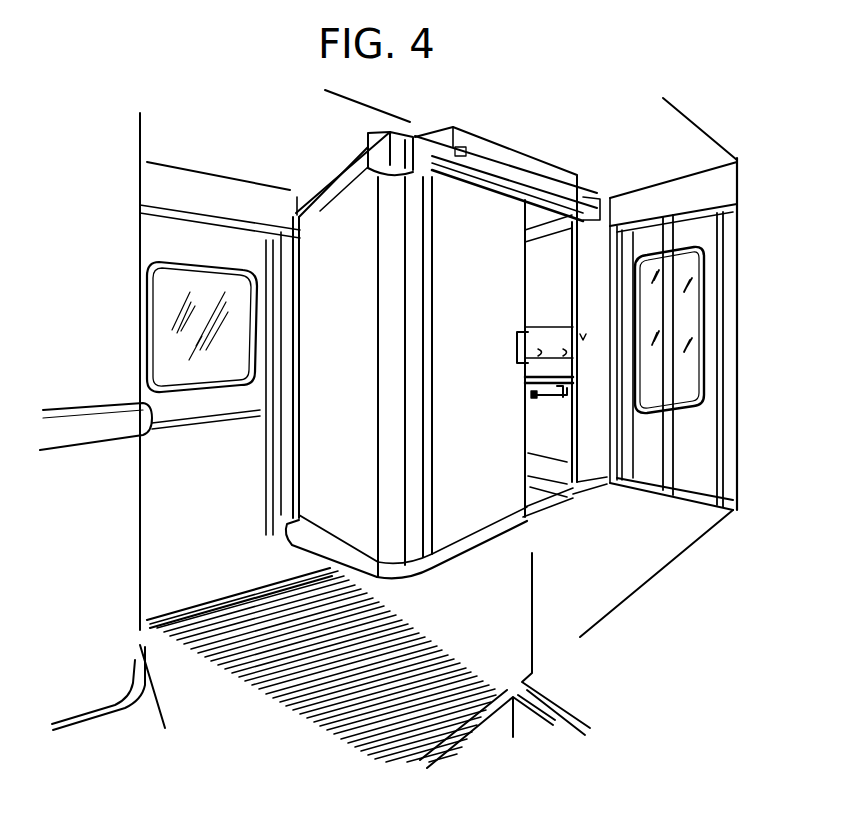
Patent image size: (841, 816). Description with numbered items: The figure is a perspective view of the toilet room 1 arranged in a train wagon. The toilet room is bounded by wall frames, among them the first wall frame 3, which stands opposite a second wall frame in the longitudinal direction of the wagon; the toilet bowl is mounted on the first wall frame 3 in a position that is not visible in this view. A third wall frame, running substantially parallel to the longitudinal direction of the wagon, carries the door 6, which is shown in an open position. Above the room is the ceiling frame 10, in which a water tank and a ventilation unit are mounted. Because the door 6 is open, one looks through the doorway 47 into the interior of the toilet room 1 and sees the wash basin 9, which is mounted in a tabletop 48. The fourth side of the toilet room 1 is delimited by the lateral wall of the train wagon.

The toilet room 1 is at (350, 133).
The first wall frame 3 is at (352, 215).
The door 6 is at (490, 215).
The doorway 47 is at (537, 230).
The ceiling frame 10 is at (603, 200).
The wash basin 9 is at (560, 392).
The tabletop 48 is at (543, 398).